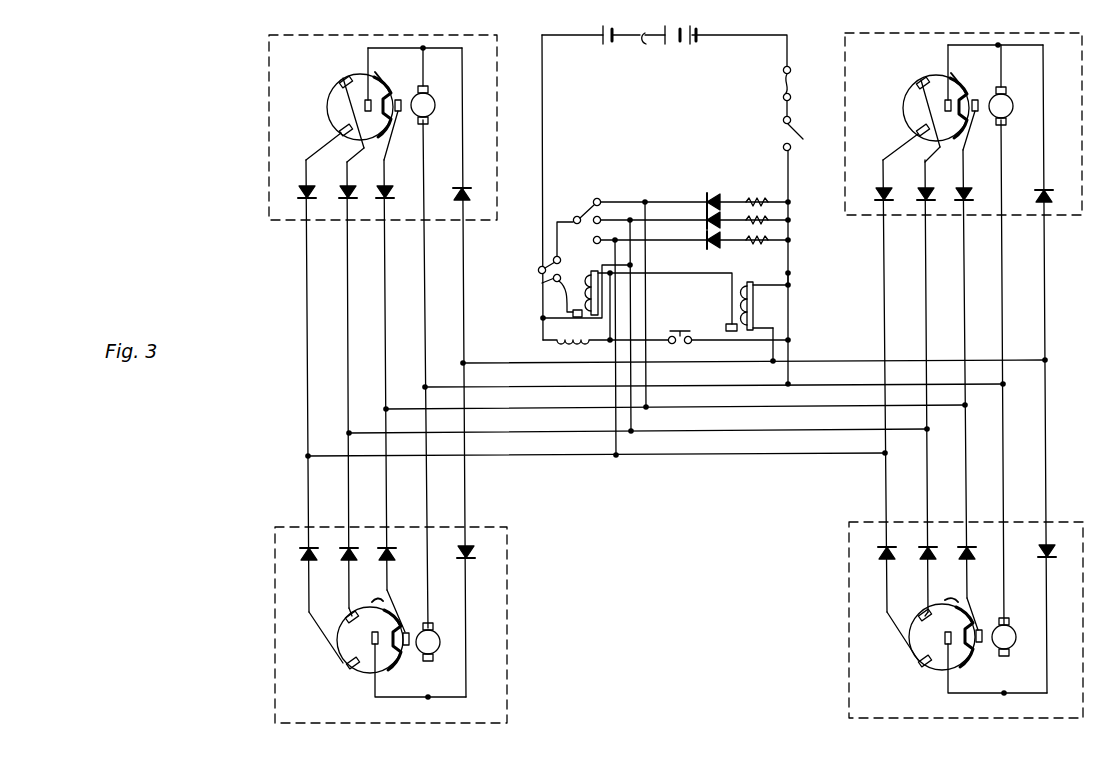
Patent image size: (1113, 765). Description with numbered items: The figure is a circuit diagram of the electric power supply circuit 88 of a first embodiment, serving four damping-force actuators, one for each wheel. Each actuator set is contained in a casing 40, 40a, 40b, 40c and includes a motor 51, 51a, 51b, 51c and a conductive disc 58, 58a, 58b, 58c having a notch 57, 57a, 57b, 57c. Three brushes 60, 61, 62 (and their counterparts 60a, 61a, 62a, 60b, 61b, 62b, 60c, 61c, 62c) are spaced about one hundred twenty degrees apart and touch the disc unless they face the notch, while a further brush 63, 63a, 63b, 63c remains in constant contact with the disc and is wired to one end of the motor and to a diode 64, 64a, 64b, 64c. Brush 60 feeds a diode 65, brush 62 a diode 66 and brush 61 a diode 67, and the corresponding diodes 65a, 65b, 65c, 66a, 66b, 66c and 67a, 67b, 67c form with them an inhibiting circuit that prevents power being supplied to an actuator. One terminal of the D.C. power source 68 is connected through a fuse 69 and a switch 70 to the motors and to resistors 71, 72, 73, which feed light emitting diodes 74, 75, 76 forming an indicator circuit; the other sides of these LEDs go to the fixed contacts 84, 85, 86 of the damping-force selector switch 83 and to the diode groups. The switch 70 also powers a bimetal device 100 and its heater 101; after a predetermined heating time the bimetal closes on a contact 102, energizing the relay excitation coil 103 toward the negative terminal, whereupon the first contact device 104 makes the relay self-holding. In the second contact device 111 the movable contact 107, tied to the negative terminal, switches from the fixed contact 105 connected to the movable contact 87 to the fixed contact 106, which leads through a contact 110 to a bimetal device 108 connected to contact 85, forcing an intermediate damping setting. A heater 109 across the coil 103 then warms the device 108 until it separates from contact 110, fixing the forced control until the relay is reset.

The casing 40 is at (1065, 222).
The casing 40a is at (848, 550).
The casing 40b is at (268, 212).
The casing 40c is at (505, 665).
The motor 51 is at (1013, 108).
The motor 51a is at (1007, 668).
The motor 51b is at (436, 100).
The motor 51c is at (445, 640).
The notch 57 is at (990, 98).
The notch 57a is at (985, 607).
The notch 57b is at (396, 86).
The notch 57c is at (440, 625).
The conductive disc 58 is at (918, 118).
The conductive disc 58a is at (940, 670).
The conductive disc 58b is at (340, 128).
The conductive disc 58c is at (370, 673).
The brush 60 is at (978, 115).
The brush 60a is at (990, 627).
The brush 60b is at (403, 112).
The brush 60c is at (405, 650).
The brush 61 is at (920, 132).
The brush 61a is at (922, 655).
The brush 61b is at (305, 160).
The brush 61c is at (348, 666).
The brush 62 is at (918, 85).
The brush 62a is at (920, 620).
The brush 62b is at (328, 88).
The brush 62c is at (343, 612).
The brush 63 is at (946, 100).
The brush 63a is at (985, 655).
The brush 63b is at (338, 82).
The brush 63c is at (372, 637).
The diode 64 is at (1045, 190).
The diode 64a is at (1047, 548).
The diode 64b is at (463, 193).
The diode 64c is at (476, 553).
The diode 65 is at (985, 183).
The diode 65a is at (970, 545).
The diode 65b is at (384, 200).
The diode 65c is at (388, 585).
The diode 66 is at (925, 190).
The diode 66a is at (924, 547).
The diode 66b is at (347, 200).
The diode 66c is at (343, 545).
The diode 67 is at (883, 190).
The diode 67a is at (882, 550).
The diode 67b is at (299, 193).
The diode 67c is at (300, 553).
The D.C. power source 68 is at (664, 50).
The fuse 69 is at (790, 78).
The switch 70 is at (793, 128).
The resistor 71 is at (768, 200).
The resistor 72 is at (770, 220).
The resistor 73 is at (770, 240).
The light emitting diode 74 is at (705, 201).
The light emitting diode 75 is at (717, 219).
The light emitting diode 76 is at (716, 243).
The damping-force selector switch 83 is at (586, 212).
The fixed contact 84 is at (597, 197).
The fixed contact 85 is at (602, 216).
The fixed contact 86 is at (602, 237).
The movable contact 87 is at (574, 218).
The electric power supply circuit 88 is at (689, 545).
The bimetal device 100 is at (755, 330).
The heater 101 is at (752, 300).
The contact 102 is at (732, 322).
The excitation coil 103 is at (560, 342).
The first contact device 104 is at (727, 326).
The fixed contact 105 is at (540, 265).
The fixed contact 106 is at (558, 283).
The movable contact 107 is at (547, 279).
The bimetal device 108 is at (640, 292).
The heater 109 is at (558, 256).
The contact 110 is at (541, 319).
The second contact device 111 is at (542, 285).